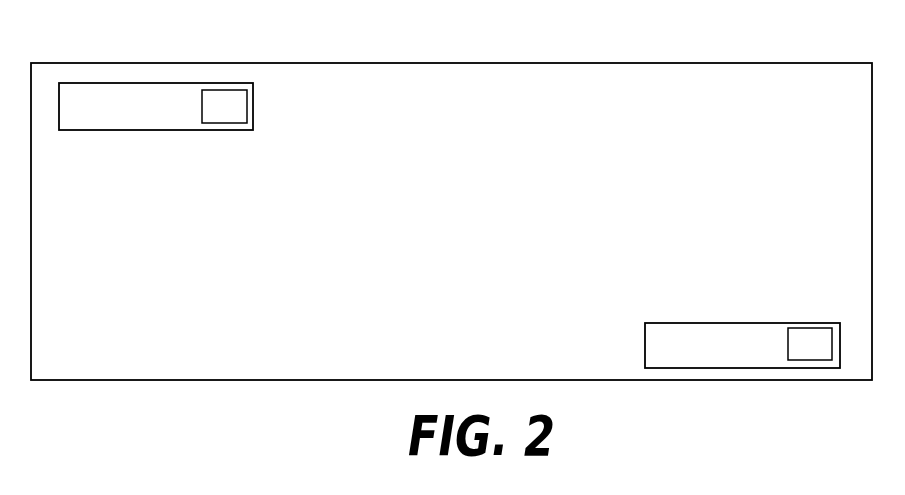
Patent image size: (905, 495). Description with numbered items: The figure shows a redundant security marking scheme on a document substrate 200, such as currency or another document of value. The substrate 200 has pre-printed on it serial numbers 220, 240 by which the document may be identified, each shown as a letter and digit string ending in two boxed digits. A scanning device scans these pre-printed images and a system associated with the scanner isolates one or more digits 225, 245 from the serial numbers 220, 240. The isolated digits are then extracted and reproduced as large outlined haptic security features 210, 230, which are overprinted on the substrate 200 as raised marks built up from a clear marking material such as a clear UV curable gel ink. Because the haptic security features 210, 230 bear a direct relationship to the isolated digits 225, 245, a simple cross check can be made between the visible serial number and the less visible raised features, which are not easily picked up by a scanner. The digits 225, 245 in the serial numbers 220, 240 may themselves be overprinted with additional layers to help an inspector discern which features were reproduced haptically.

The document substrate 200 is at (165, 63).
The haptic security feature 210 is at (228, 123).
The serial number 220 is at (254, 108).
The digits in the serial number 225 is at (340, 241).
The haptic security feature 230 is at (590, 266).
The serial number 240 is at (645, 350).
The digits in the serial number 245 is at (816, 328).